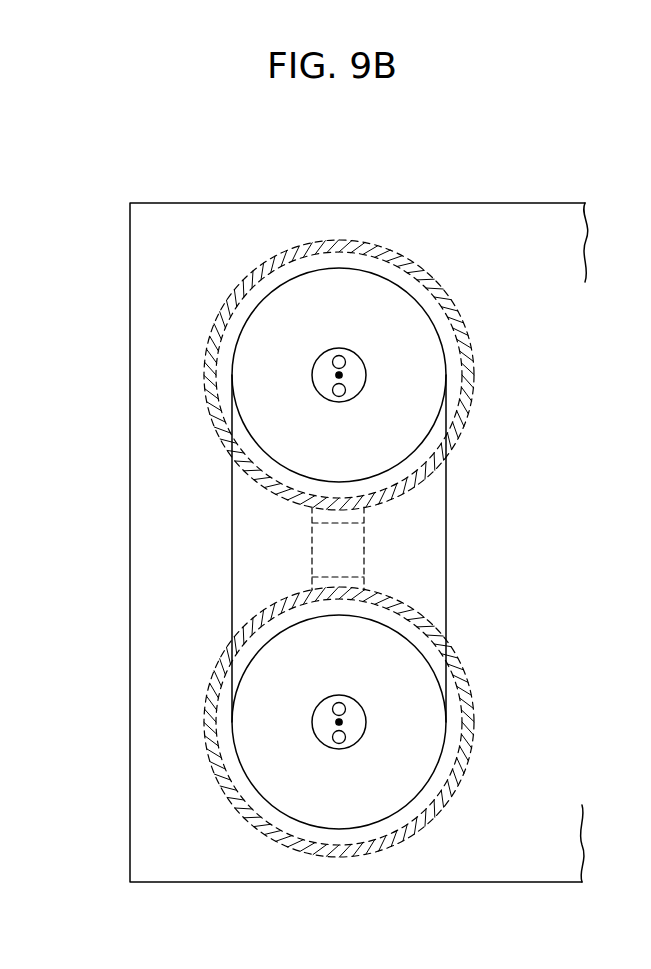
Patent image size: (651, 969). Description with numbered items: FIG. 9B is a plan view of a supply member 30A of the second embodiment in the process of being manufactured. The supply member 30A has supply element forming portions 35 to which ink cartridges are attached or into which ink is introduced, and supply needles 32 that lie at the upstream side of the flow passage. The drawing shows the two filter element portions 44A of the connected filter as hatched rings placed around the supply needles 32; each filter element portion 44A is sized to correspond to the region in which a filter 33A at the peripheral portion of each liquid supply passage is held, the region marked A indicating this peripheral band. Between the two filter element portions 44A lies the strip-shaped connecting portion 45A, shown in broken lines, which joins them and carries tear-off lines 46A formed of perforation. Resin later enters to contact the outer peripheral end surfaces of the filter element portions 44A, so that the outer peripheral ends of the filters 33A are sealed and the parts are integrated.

The supply member 30A is at (540, 143).
The supply element forming portion 35 is at (521, 304).
The supply needle 32 is at (284, 319).
The region A is at (408, 264).
The filter element portion 44A is at (471, 367).
The filter 33A is at (339, 375).
The connecting portion 45A is at (364, 538).
The tear-off line 46A is at (340, 575).